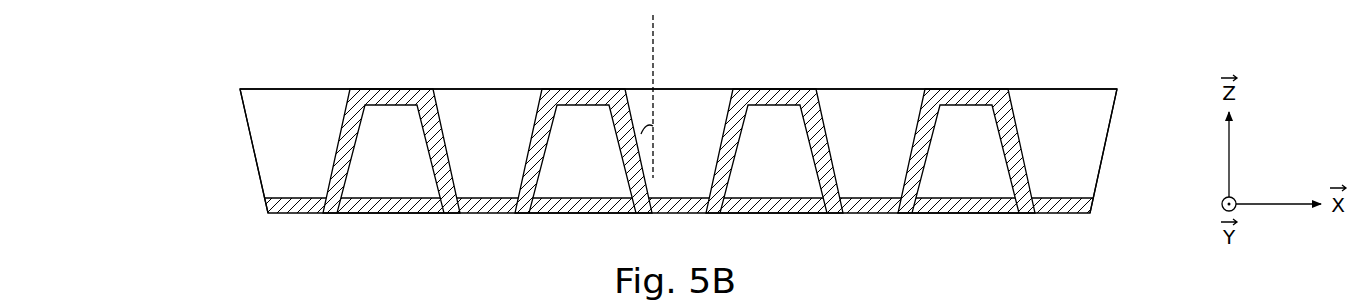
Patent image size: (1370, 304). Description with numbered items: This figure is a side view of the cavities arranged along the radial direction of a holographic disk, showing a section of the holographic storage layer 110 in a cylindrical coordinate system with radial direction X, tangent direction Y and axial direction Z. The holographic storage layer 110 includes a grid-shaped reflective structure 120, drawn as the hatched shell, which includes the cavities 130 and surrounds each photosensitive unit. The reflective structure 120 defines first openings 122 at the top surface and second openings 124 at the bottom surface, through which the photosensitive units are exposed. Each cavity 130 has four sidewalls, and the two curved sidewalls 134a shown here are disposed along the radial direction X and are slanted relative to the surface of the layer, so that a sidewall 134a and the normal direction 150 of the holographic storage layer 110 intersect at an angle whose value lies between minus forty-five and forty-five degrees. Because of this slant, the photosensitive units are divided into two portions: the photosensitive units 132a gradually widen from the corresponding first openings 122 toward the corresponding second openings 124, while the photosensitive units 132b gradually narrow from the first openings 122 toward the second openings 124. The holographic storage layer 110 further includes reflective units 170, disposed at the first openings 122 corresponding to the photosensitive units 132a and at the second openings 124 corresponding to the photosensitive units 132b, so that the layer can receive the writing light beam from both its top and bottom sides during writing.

The holographic storage layer 110 is at (115, 37).
The reflective structure 120 is at (1113, 115).
The first openings 122 is at (296, 88).
The second openings 124 is at (296, 215).
The cavities 130 is at (318, 109).
The photosensitive units of the first portion 132a is at (775, 115).
The photosensitive units of the second portion 132b is at (478, 103).
The curved sidewalls 134a is at (623, 89).
The normal direction 150 is at (653, 60).
The reflective units 170 is at (973, 89).